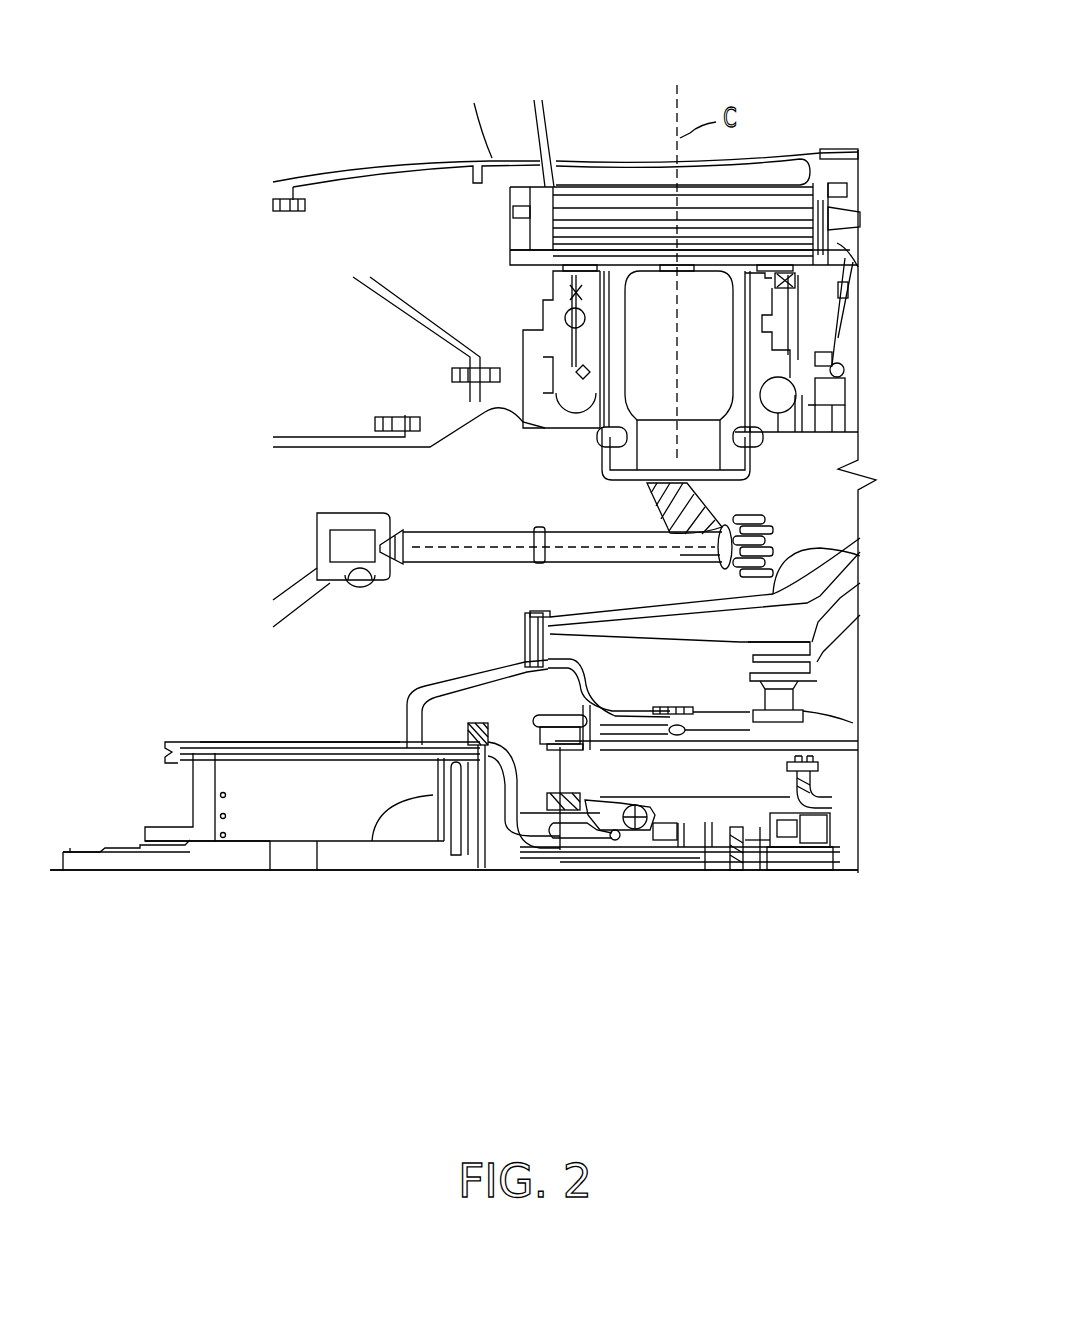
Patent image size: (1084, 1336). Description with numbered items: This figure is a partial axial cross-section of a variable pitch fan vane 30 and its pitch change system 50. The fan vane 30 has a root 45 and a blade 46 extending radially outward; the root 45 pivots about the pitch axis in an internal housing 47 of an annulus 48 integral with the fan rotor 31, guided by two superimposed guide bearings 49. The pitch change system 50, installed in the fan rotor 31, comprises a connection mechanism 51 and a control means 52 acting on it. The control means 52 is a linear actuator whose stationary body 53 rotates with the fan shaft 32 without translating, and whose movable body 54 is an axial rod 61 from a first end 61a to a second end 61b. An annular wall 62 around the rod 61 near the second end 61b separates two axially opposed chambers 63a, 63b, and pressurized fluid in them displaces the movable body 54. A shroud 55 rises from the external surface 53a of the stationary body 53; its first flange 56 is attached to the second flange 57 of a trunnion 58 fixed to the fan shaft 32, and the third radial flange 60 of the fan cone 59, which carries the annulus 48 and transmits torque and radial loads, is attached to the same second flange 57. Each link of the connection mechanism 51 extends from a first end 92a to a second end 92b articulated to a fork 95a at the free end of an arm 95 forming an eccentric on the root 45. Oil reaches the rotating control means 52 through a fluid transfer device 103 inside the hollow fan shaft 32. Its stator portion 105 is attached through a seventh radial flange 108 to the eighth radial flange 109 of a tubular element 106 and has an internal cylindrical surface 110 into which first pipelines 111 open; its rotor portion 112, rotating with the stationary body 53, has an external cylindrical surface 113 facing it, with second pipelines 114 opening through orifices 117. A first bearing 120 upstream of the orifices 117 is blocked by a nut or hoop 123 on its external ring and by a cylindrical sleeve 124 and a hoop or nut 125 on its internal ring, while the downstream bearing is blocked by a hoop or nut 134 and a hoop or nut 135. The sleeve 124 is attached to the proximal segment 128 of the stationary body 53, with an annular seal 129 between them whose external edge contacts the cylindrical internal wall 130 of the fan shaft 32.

The fan vane 30 is at (470, 49).
The blade 46 is at (510, 100).
The housing 47 is at (563, 313).
The root 45 is at (745, 318).
The annulus 48 is at (515, 340).
The guide bearings 49 is at (780, 385).
The arm 95 is at (718, 525).
The fork 95a is at (775, 530).
The connection mechanism 51 is at (468, 528).
The first end 92a is at (405, 537).
The second end 92b is at (690, 556).
The fan cone 59 is at (860, 556).
The fan rotor 31 is at (800, 660).
The fan shaft 32 is at (820, 737).
The cylindrical internal wall 130 is at (686, 753).
The second flange 57 is at (525, 620).
The first flange 56 is at (525, 653).
The shroud 55 is at (478, 677).
The third radial flange 60 is at (553, 632).
The annular seal 129 is at (521, 745).
The stationary body 53 is at (272, 740).
The external surface 53a is at (288, 735).
The pitch change system 50 is at (188, 670).
The first end 61a is at (88, 848).
The control means 52 is at (115, 878).
The movable body 54 is at (172, 862).
The axial rod 61 is at (195, 862).
The chamber 63a is at (273, 823).
The annular wall 62 is at (372, 845).
The second end 61b is at (433, 880).
The chamber 63b is at (455, 880).
The proximal segment 128 is at (483, 870).
The trunnion 58 is at (553, 830).
The first bearing 120 is at (612, 805).
The hoop or nut 125 is at (562, 842).
The cylindrical sleeve 124 is at (592, 860).
The nut or hoop 123 is at (620, 860).
The external cylindrical surface 113 is at (664, 823).
The first pipelines 111 is at (742, 822).
The rotor portion 112 is at (700, 872).
The fluid transfer device 103 is at (705, 882).
The stator portion 105 is at (713, 878).
The second pipelines 114 is at (739, 875).
The orifices 117 is at (760, 865).
The internal cylindrical surface 110 is at (765, 855).
The eighth radial flange 109 is at (825, 775).
The tubular element 106 is at (830, 803).
The seventh radial flange 108 is at (838, 818).
The hoop or nut 134 is at (835, 830).
The hoop or nut 135 is at (840, 866).